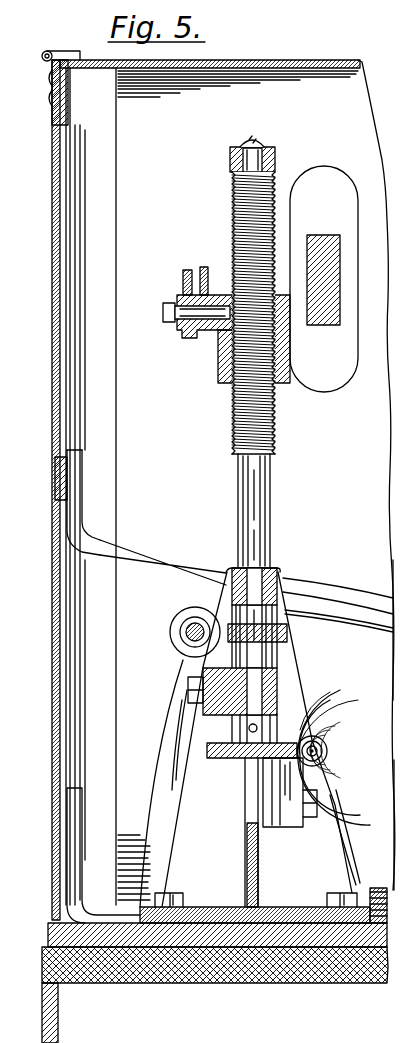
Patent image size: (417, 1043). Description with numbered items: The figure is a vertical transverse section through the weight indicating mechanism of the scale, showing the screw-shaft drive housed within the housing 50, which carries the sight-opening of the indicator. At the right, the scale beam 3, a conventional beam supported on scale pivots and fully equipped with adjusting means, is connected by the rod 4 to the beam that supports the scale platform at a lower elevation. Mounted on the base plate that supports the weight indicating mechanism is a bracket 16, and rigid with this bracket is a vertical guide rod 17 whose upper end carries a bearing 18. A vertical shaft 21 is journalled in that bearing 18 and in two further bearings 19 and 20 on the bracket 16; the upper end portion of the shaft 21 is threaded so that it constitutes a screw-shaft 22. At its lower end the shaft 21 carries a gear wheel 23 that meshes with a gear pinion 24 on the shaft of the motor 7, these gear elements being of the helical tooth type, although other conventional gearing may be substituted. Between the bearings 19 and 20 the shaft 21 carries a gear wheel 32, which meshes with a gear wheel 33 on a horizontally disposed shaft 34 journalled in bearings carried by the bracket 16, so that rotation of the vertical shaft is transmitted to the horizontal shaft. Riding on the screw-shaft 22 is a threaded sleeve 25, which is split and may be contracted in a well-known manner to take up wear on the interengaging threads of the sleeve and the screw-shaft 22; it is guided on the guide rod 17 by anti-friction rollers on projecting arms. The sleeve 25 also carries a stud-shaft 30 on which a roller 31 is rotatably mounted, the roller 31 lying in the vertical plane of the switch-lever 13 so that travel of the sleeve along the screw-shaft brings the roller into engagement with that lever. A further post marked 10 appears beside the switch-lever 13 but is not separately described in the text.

The scale beam 3 is at (323, 236).
The rod 4 is at (396, 636).
The motor 7 is at (392, 812).
The post 10 is at (205, 267).
The switch-lever 13 is at (186, 270).
The bracket 16 is at (176, 838).
The vertical guide rod 17 is at (238, 492).
The bearing 18 is at (275, 150).
The bearing 19 is at (278, 570).
The bearing 20 is at (278, 695).
The vertical shaft 21 is at (250, 518).
The screw-shaft 22 is at (277, 421).
The gear wheel 23 is at (215, 758).
The gear pinion 24 is at (322, 742).
The threaded sleeve 25 is at (218, 376).
The stud-shaft 30 is at (212, 338).
The roller 31 is at (172, 327).
The gear wheel 32 is at (288, 633).
The gear wheel 33 is at (188, 610).
The horizontally disposed shaft 34 is at (186, 634).
The housing 50 is at (52, 712).